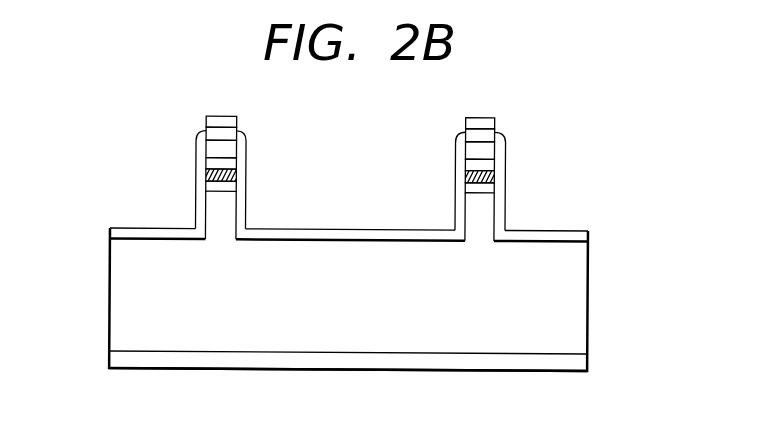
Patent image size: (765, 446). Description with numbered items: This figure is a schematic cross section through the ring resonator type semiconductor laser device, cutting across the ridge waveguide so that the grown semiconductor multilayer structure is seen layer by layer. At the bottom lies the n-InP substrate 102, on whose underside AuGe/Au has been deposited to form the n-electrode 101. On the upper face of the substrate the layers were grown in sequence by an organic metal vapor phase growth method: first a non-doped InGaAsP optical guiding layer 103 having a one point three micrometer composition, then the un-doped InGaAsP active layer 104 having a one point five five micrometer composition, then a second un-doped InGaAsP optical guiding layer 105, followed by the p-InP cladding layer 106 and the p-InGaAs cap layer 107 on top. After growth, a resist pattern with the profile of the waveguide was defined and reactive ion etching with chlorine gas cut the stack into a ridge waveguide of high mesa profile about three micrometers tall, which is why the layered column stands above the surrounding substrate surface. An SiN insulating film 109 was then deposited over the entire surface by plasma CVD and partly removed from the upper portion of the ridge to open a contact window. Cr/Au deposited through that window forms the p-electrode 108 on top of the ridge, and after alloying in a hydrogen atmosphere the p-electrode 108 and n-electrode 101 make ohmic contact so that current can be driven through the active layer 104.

The n-electrode 101 is at (582, 363).
The n-InP substrate 102 is at (120, 303).
The optical guiding layer 103 is at (210, 187).
The active layer 104 is at (209, 172).
The optical guiding layer 105 is at (209, 162).
The p-InP cladding layer 106 is at (229, 148).
The p-InGaAs cap layer 107 is at (229, 132).
The p-electrode 108 is at (229, 119).
The insulating film 109 is at (263, 232).